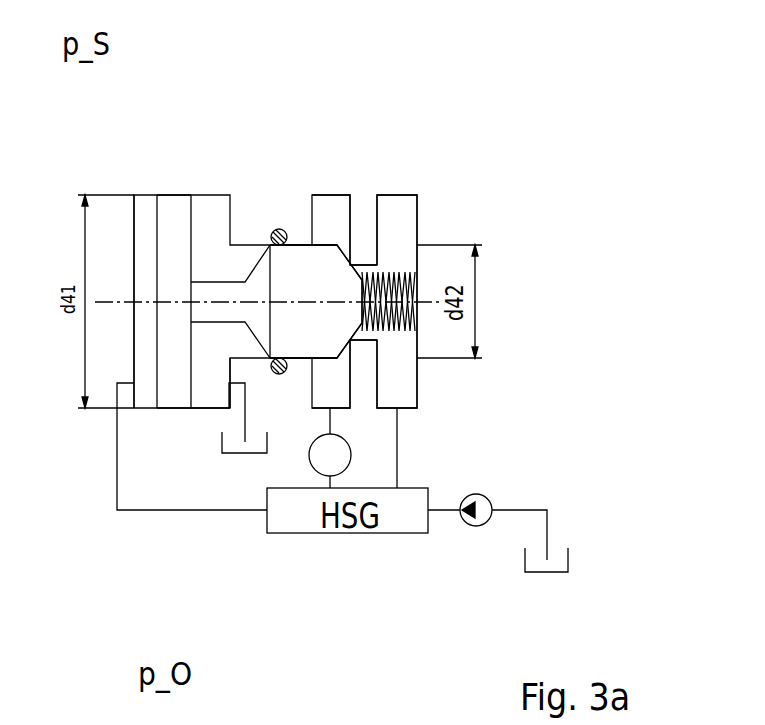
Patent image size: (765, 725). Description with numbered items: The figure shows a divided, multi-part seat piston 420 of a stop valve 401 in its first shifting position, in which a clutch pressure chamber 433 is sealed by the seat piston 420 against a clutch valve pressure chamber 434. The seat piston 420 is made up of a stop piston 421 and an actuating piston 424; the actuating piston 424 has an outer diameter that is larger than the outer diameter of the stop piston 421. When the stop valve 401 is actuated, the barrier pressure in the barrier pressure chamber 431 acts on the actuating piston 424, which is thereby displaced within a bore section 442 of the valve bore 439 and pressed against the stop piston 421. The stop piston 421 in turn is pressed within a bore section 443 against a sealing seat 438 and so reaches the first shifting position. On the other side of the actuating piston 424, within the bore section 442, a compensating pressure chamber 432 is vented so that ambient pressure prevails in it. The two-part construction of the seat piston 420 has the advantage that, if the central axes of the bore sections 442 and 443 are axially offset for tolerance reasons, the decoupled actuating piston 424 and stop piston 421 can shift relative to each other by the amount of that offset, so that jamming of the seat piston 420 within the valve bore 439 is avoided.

The stop valve 401 is at (465, 180).
The seat piston 420 is at (276, 220).
The stop piston 421 is at (305, 268).
The actuating piston 424 is at (175, 207).
The barrier pressure chamber 431 is at (140, 194).
The compensating pressure chamber 432 is at (208, 390).
The clutch pressure chamber 433 is at (330, 208).
The clutch valve pressure chamber 434 is at (398, 208).
The sealing seat 438 is at (350, 342).
The valve bore 439 is at (227, 480).
The bore section 442 is at (208, 390).
The bore section 443 is at (333, 420).